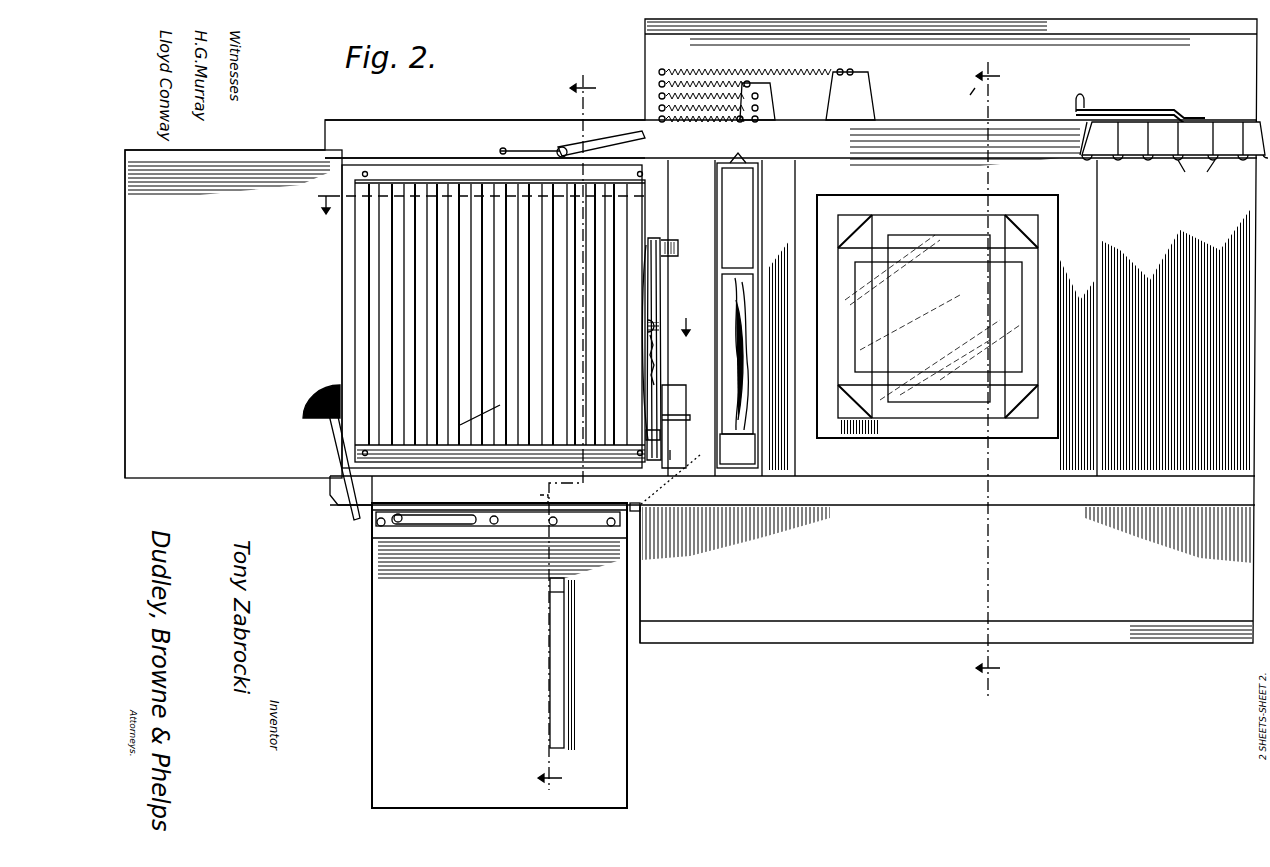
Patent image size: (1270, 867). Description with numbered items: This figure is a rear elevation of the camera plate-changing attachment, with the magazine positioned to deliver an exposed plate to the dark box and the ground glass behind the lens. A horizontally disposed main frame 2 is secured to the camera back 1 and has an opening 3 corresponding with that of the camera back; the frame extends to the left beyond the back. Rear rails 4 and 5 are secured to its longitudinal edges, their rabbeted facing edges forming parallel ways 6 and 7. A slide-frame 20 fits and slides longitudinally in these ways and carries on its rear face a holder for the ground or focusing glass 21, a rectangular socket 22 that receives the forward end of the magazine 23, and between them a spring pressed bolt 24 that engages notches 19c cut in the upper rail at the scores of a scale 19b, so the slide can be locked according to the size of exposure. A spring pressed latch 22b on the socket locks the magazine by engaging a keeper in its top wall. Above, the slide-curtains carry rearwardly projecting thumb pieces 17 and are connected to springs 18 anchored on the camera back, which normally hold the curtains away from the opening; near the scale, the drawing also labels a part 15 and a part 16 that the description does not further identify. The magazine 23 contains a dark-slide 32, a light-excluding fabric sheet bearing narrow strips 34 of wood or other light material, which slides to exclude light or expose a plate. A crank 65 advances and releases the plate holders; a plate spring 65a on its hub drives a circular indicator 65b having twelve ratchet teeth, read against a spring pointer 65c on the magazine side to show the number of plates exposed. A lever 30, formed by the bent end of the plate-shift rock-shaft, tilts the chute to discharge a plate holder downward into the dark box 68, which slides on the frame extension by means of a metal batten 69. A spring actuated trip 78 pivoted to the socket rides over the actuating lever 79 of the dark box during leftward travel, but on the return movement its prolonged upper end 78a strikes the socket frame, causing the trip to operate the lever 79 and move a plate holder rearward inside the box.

The camera back 1 is at (967, 88).
The main frame 2 is at (233, 314).
The opening 3 is at (988, 371).
The upper rear rail 4 is at (490, 120).
The lower rear rail 5 is at (792, 490).
The way 6 is at (499, 260).
The way 7 is at (567, 427).
The hook 15 is at (1086, 100).
The bar 16 is at (1140, 110).
The thumb piece 17 is at (760, 100).
The springs 18 is at (700, 82).
The scale 19b is at (1208, 124).
The notches 19c is at (1196, 176).
The slide-frame 20 is at (937, 300).
The ground or focusing glass 21 is at (933, 318).
The rectangular socket 22 is at (395, 162).
The spring pressed latch 22b is at (502, 141).
The magazine 23 is at (382, 352).
The spring pressed bolt 24 is at (742, 318).
The lever 30 is at (686, 418).
The dark-slide 32 is at (498, 314).
The narrow strips 34 is at (530, 406).
The crank 65 is at (658, 298).
The plate spring 65a is at (655, 360).
The circular indicator 65b is at (678, 360).
The spring pointer 65c is at (655, 435).
The dark-box 68 is at (470, 672).
The metal batten 69 is at (538, 500).
The spring actuated trip 78 is at (345, 520).
The prolonged upper end of trip 78a is at (303, 410).
The actuating lever 79 is at (390, 522).